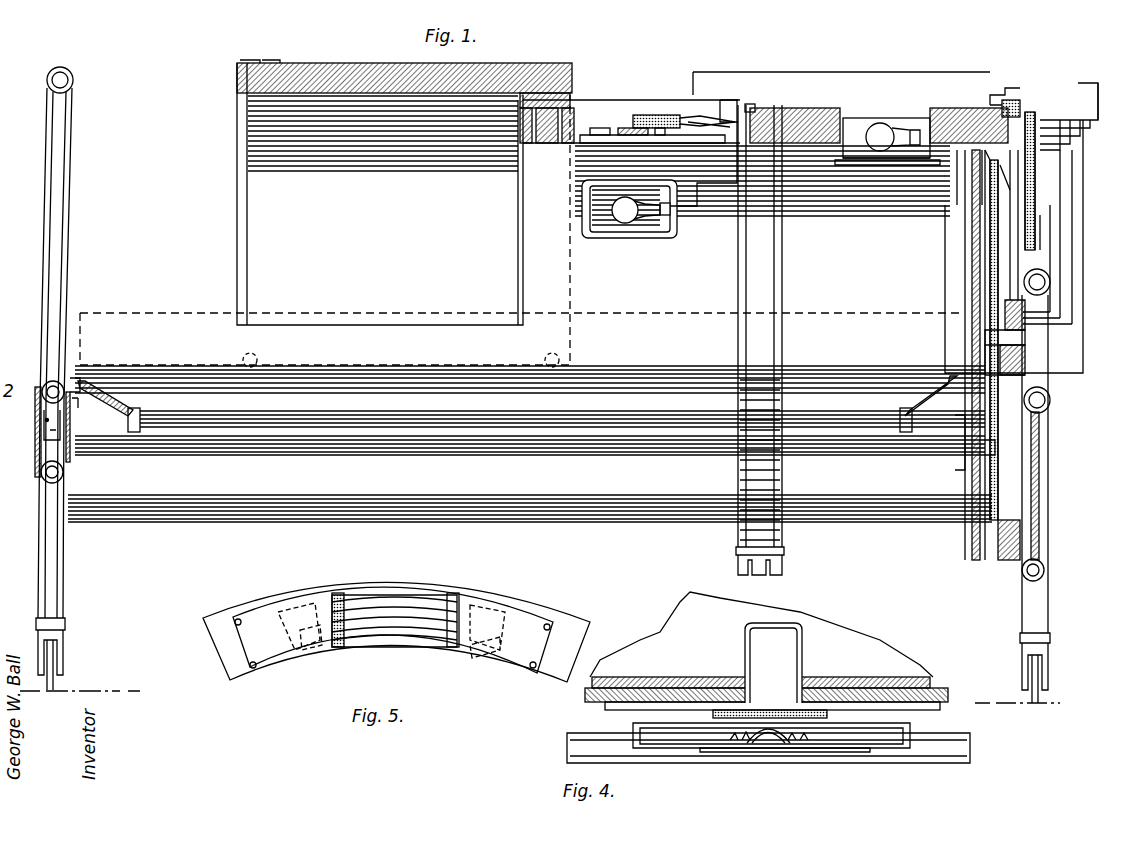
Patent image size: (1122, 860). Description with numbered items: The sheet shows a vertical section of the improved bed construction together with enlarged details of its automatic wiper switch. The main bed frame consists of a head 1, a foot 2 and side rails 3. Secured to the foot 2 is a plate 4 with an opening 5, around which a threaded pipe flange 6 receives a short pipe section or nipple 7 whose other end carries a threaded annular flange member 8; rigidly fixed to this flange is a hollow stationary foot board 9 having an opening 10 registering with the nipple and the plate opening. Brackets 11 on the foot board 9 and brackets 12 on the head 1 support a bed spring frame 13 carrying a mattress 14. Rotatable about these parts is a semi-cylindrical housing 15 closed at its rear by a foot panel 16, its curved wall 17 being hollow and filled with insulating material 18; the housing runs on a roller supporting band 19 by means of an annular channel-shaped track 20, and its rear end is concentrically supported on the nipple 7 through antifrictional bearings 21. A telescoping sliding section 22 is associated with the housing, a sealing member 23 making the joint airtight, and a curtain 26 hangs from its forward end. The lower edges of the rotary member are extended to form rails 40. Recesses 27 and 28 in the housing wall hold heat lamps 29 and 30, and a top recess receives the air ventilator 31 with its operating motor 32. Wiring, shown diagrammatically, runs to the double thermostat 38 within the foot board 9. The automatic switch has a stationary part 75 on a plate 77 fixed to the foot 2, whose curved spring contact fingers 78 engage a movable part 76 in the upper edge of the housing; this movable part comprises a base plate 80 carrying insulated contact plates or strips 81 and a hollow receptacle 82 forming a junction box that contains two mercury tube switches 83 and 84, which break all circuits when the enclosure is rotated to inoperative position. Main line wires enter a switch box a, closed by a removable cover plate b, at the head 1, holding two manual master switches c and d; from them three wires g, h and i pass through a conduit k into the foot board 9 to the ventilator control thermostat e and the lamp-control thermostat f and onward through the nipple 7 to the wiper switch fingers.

In FIG. 1, the head 1 is at (70, 282).
In FIG. 1, the foot 2 is at (1046, 440).
In FIG. 1, the side rails 3 is at (435, 493).
In FIG. 1, the plate 4 is at (1046, 396).
In FIG. 1, the opening 5 is at (1015, 312).
In FIG. 1, the threaded pipe flange 6 is at (1027, 350).
In FIG. 1, the pipe section or nipple 7 is at (990, 345).
In FIG. 1, the threaded annular flange member 8 is at (985, 355).
In FIG. 1, the stationary foot board 9 is at (988, 262).
In FIG. 1, the opening 10 is at (987, 341).
In FIG. 1, the brackets 11 is at (963, 407).
In FIG. 1, the brackets 12 is at (78, 397).
In FIG. 1, the bed spring frame 13 is at (113, 395).
In FIG. 1, the mattress 14 is at (687, 333).
In FIG. 1, the semi-cylindrical housing 15 is at (590, 260).
In FIG. 1, the foot panel 16 is at (1006, 244).
In FIG. 1, the curved wall 17 is at (838, 110).
In FIG. 1, the insulating material 18 is at (798, 110).
In FIG. 1, the roller supporting band 19 is at (784, 558).
In FIG. 1, the annular channel-shaped track 20 is at (760, 108).
In FIG. 1, the antifrictional bearings 21 is at (1022, 318).
In FIG. 1, the telescoping sliding section 22 is at (380, 95).
In FIG. 1, the sealing member 23 is at (525, 72).
In FIG. 1, the curtain 26 is at (236, 192).
In FIG. 1, the recess 27 is at (664, 232).
In FIG. 1, the recess 28 is at (862, 118).
In FIG. 1, the heat lamp 29 is at (635, 216).
In FIG. 1, the heat lamp 30 is at (890, 118).
In FIG. 1, the air ventilator 31 is at (605, 130).
In FIG. 1, the operating motor 32 is at (650, 115).
In FIG. 1, the double thermostat 38 is at (948, 210).
In FIG. 1, the rails 40 is at (337, 333).
In FIG. 1, the stationary part 75 is at (1035, 122).
In FIG. 4, the stationary part 75 is at (815, 750).
In FIG. 1, the movable part 76 is at (1018, 114).
In FIG. 5, the movable part 76 is at (455, 612).
In FIG. 4, the movable part 76 is at (825, 700).
In FIG. 1, the plate 77 is at (1040, 215).
In FIG. 4, the curved spring contact fingers 78 is at (757, 750).
In FIG. 5, the base plate 80 is at (535, 620).
In FIG. 4, the base plate 80 is at (625, 697).
In FIG. 5, the contact plates or strips 81 is at (437, 620).
In FIG. 4, the contact plates or strips 81 is at (712, 690).
In FIG. 4, the hollow receptacle 82 is at (792, 628).
In FIG. 1, the mercury tube switch 83 is at (1084, 80).
In FIG. 5, the mercury tube switch 83 is at (515, 602).
In FIG. 4, the mercury tube switch 83 is at (870, 685).
In FIG. 1, the mercury tube switch 84 is at (1023, 84).
In FIG. 5, the mercury tube switch 84 is at (312, 595).
In FIG. 4, the mercury tube switch 84 is at (690, 702).
In FIG. 1, the switch box a is at (60, 453).
In FIG. 1, the removable cover plate b is at (35, 447).
In FIG. 1, the manually operated switch c is at (43, 383).
In FIG. 1, the manually operated switch d is at (38, 418).
In FIG. 1, the ventilator control thermostat e is at (987, 193).
In FIG. 1, the lamp or heater-control thermostat f is at (1025, 200).
In FIG. 1, the wire g is at (293, 450).
In FIG. 1, the wire h is at (340, 450).
In FIG. 1, the wire i is at (388, 450).
In FIG. 1, the conduit k is at (552, 457).